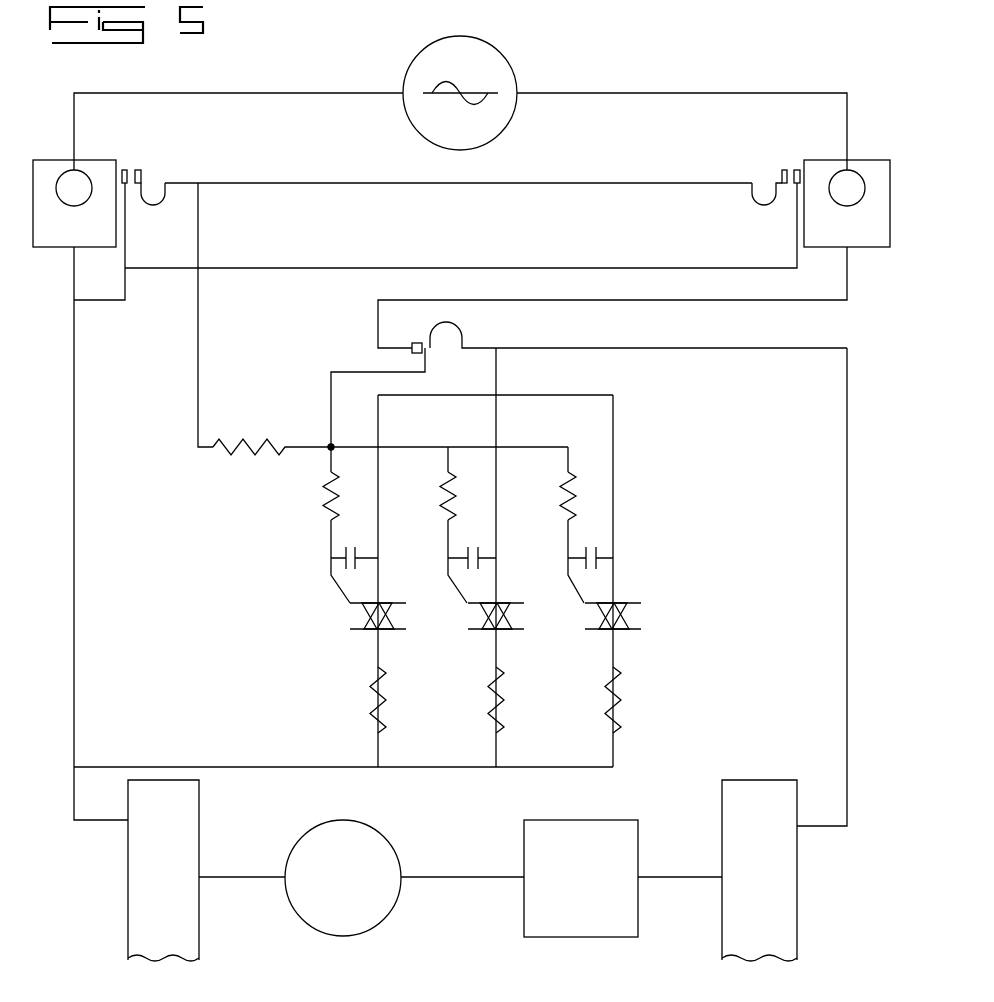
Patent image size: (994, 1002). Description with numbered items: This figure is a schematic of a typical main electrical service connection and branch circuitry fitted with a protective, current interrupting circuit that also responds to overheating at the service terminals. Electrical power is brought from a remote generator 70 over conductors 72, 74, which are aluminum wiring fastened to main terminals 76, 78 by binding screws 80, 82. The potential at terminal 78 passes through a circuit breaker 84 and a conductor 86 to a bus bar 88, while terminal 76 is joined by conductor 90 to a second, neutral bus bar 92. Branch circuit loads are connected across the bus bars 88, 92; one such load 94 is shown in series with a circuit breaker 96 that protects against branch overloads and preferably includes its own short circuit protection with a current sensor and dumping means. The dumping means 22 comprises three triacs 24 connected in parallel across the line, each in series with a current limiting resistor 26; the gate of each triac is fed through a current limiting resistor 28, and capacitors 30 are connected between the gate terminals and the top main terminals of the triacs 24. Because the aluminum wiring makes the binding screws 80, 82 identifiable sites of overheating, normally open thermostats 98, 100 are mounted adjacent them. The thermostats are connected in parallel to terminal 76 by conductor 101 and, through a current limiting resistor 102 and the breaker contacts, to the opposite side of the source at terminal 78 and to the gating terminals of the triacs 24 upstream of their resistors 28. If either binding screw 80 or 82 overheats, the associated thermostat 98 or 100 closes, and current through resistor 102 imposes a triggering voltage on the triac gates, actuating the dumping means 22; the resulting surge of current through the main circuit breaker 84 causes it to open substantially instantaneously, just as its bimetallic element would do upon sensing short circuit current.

The dumping means 22 is at (292, 620).
The triacs 24 is at (362, 631).
The current limiting resistor 26 is at (370, 718).
The current limiting resistors 28 is at (328, 494).
The capacitors 30 is at (345, 556).
The remote generator 70 is at (496, 50).
The conductor 72 is at (74, 112).
The conductor 74 is at (848, 115).
The main terminal 76 is at (97, 160).
The main terminal 78 is at (893, 172).
The binding screw 80 is at (60, 176).
The binding screw 82 is at (836, 176).
The circuit breaker 84 is at (472, 336).
The conductor 86 is at (847, 428).
The bus bar 88 is at (797, 866).
The conductor 90 is at (74, 660).
The neutral bus bar 92 is at (200, 826).
The load 94 is at (374, 832).
The circuit breaker 96 is at (626, 820).
The thermostat 98 is at (140, 160).
The thermostat 100 is at (782, 160).
The conductor 101 is at (198, 336).
The current limiting resistor 102 is at (268, 440).